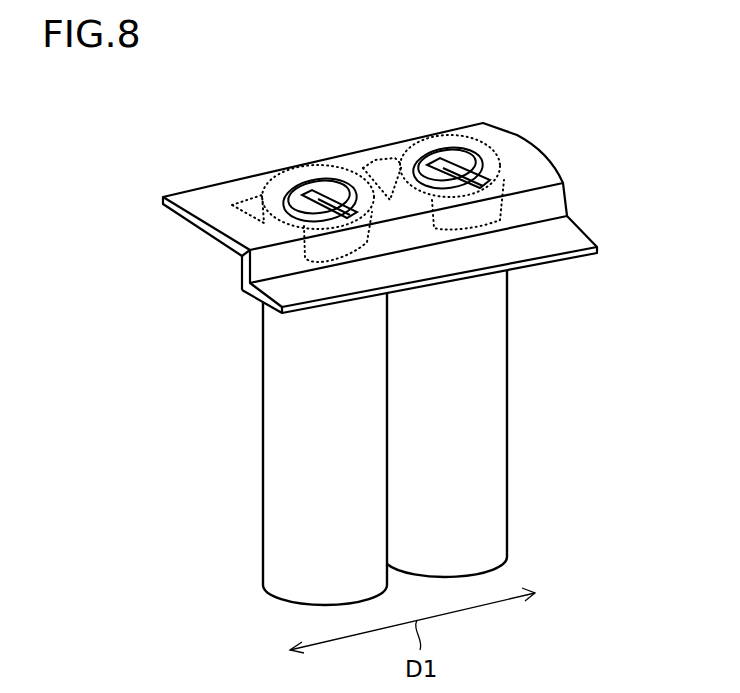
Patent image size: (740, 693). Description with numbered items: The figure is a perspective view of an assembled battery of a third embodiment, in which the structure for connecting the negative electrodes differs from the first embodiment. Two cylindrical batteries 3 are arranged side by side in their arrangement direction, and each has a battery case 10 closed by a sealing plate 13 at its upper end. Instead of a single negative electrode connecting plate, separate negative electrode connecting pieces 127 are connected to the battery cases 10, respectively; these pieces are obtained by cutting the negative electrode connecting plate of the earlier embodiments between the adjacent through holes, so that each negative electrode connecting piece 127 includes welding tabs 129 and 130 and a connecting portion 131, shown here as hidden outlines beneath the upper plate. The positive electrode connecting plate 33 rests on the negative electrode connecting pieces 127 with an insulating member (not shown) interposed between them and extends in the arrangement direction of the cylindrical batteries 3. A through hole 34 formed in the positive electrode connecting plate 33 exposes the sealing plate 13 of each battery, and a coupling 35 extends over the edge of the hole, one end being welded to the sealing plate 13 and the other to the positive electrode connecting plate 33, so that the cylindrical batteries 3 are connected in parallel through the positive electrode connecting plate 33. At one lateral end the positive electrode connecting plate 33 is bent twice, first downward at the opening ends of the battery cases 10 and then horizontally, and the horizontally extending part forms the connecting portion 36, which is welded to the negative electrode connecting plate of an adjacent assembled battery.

The cylindrical battery 3 is at (488, 431).
The battery case 10 is at (420, 437).
The sealing plate 13 is at (416, 212).
The positive electrode connecting plate 33 is at (532, 177).
The through hole 34 is at (433, 185).
The coupling 35 is at (473, 167).
The connecting portion 36 is at (552, 233).
The negative electrode connecting piece 127 is at (418, 140).
The welding tab 129 is at (480, 217).
The welding tab 130 is at (384, 155).
The connecting portion 131 is at (362, 152).